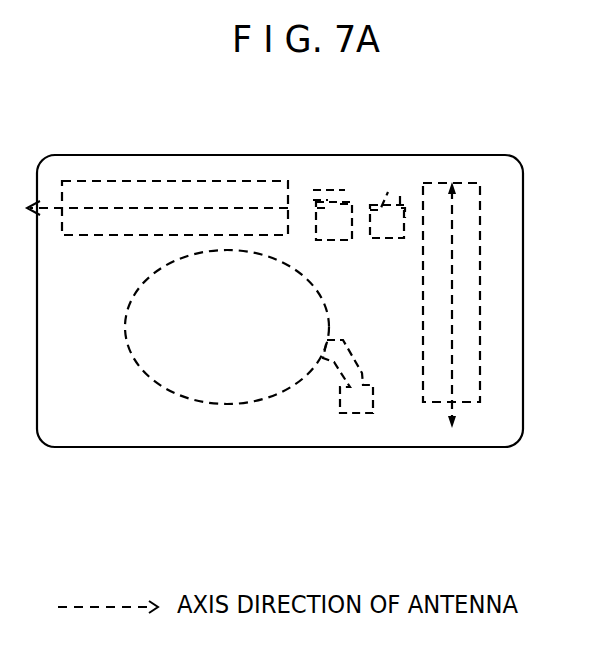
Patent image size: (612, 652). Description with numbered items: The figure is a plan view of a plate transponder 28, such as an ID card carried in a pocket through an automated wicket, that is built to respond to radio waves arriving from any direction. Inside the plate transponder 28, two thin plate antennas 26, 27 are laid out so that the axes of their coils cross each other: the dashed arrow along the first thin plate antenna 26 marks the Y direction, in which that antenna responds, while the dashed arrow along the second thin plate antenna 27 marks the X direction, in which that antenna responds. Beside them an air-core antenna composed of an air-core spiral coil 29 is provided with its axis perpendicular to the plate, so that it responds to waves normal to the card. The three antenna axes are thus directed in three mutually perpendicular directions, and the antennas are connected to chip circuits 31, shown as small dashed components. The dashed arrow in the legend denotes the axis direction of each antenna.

The thin plate antenna 26 is at (240, 181).
The thin plate antenna 27 is at (434, 175).
The plate transponder 28 is at (91, 441).
The air-core spiral coil 29 is at (206, 412).
The chip circuit 31 is at (390, 240).
The X direction X is at (453, 302).
The Y direction Y is at (138, 208).